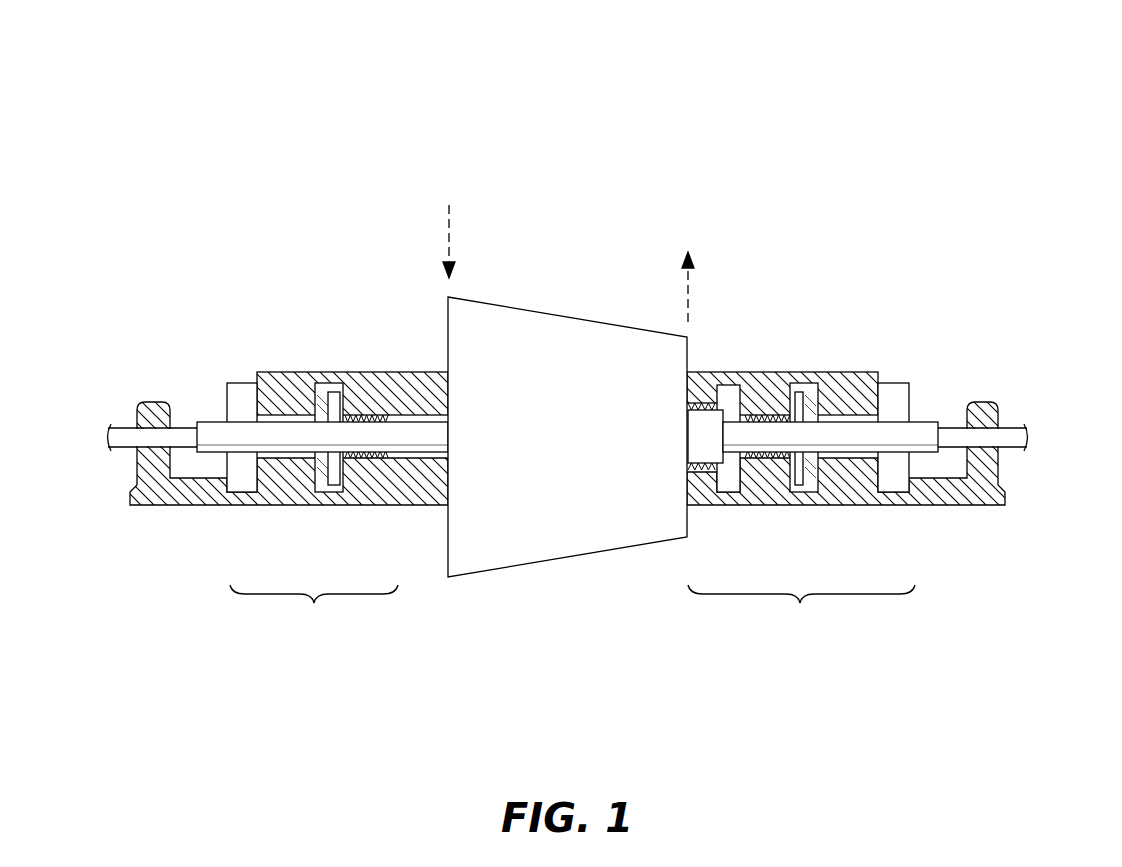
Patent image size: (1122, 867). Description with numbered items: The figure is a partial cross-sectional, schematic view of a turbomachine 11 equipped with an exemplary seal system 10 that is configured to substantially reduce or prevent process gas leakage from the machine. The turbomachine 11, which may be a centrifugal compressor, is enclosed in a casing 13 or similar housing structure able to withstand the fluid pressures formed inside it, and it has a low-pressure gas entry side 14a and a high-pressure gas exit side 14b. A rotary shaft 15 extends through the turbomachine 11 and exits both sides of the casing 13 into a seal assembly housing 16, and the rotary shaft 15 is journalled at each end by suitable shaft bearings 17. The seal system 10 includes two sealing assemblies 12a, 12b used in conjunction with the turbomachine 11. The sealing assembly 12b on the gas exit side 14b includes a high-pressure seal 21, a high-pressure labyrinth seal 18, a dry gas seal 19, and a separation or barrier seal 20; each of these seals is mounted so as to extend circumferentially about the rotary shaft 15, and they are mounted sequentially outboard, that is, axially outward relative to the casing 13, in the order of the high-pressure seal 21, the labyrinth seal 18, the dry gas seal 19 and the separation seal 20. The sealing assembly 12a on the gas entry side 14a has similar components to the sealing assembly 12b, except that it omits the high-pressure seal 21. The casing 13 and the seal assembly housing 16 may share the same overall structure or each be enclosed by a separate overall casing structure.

The seal system 10 is at (831, 108).
The turbomachine 11 is at (567, 415).
The sealing assembly 12a is at (314, 612).
The sealing assembly 12b is at (801, 614).
The casing 13 is at (585, 321).
The low-pressure gas entry side 14a is at (450, 240).
The high-pressure gas exit side 14b is at (690, 290).
The rotary shaft 15 is at (205, 422).
The seal assembly housing 16 is at (153, 402).
The shaft bearings 17 is at (128, 450).
The high-pressure labyrinth seal 18 is at (378, 416).
The dry gas seal 19 is at (333, 488).
The separation seal 20 is at (240, 483).
The high-pressure seal 21 is at (698, 473).